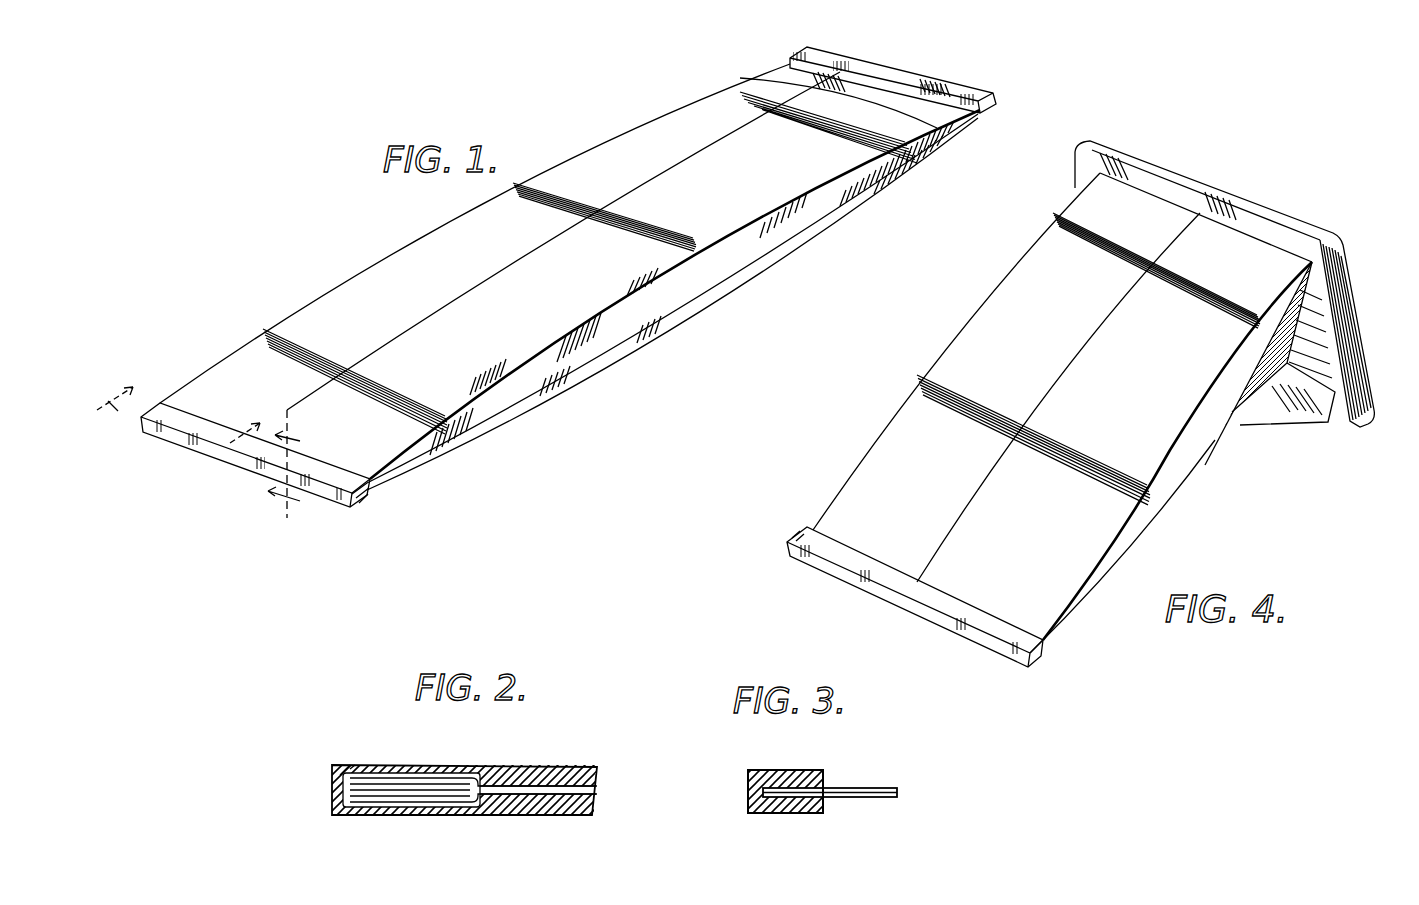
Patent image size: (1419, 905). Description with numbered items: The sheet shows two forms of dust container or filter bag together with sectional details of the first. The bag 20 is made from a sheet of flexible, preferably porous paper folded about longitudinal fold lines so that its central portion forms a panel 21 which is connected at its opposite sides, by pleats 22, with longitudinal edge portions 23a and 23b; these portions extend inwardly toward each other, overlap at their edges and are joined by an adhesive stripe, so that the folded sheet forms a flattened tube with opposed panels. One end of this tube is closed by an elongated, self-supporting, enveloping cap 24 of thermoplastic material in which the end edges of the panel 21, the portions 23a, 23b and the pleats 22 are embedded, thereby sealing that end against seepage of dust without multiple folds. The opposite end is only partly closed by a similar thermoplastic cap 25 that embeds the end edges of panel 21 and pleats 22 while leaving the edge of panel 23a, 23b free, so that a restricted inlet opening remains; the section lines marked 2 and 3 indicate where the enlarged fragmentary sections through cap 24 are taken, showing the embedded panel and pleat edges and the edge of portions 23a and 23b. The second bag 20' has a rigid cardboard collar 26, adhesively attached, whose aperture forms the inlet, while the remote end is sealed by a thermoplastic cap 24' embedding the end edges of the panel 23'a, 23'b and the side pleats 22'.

In FIG. 1, the bag 20 is at (500, 237).
In FIG. 2, the bag 20 is at (464, 758).
In FIG. 4, the filter bag 20' is at (1062, 377).
In FIG. 1, the panel 21 is at (883, 89).
In FIG. 2, the panel 21 is at (568, 815).
In FIG. 3, the panel 21 is at (868, 802).
In FIG. 1, the pleats 22 is at (672, 304).
In FIG. 2, the pleats 22 is at (470, 812).
In FIG. 1, the longitudinal edge portion 23a is at (823, 160).
In FIG. 3, the longitudinal edge portion 23a is at (870, 788).
In FIG. 1, the longitudinal edge portion 23b is at (697, 110).
In FIG. 2, the longitudinal edge portion 23b is at (567, 807).
In FIG. 4, the panel portion 23'a is at (1186, 404).
In FIG. 4, the panel portion 23'b is at (1022, 223).
In FIG. 4, the side pleats 22' is at (1182, 457).
In FIG. 1, the cap 24 is at (255, 457).
In FIG. 2, the cap 24 is at (464, 808).
In FIG. 3, the cap 24 is at (785, 766).
In FIG. 4, the cap 24' is at (915, 597).
In FIG. 1, the cap 25 is at (917, 73).
In FIG. 4, the cardboard collar 26 is at (1200, 192).
In FIG. 1, the section line 2- 2 is at (178, 402).
In FIG. 1, the section line 3- 3 is at (295, 472).